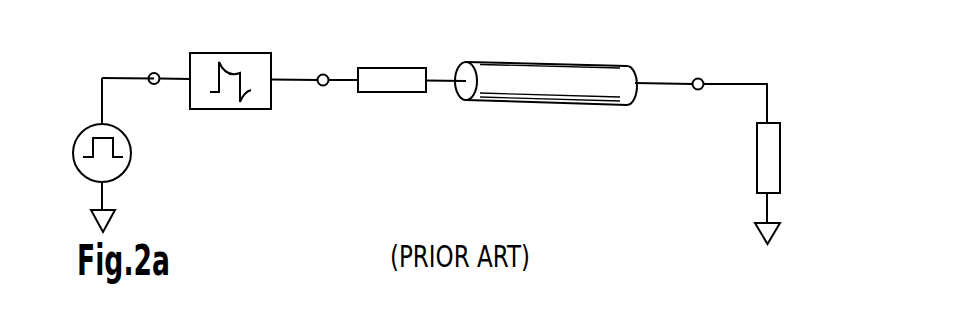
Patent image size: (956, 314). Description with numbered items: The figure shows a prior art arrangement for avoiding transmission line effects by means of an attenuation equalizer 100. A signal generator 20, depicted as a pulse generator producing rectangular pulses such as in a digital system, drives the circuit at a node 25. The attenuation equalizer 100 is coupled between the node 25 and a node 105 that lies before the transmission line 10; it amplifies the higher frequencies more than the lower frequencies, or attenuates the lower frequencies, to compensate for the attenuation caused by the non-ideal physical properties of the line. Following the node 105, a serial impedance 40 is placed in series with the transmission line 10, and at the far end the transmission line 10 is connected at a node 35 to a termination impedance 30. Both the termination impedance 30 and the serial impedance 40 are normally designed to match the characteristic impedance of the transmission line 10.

The transmission line 10 is at (572, 90).
The signal generator 20 is at (131, 156).
The node 25 is at (154, 84).
The termination impedance 30 is at (770, 165).
The node 35 is at (698, 90).
The serial impedance 40 is at (402, 88).
The attenuation equalizer 100 is at (260, 103).
The node 105 is at (324, 86).